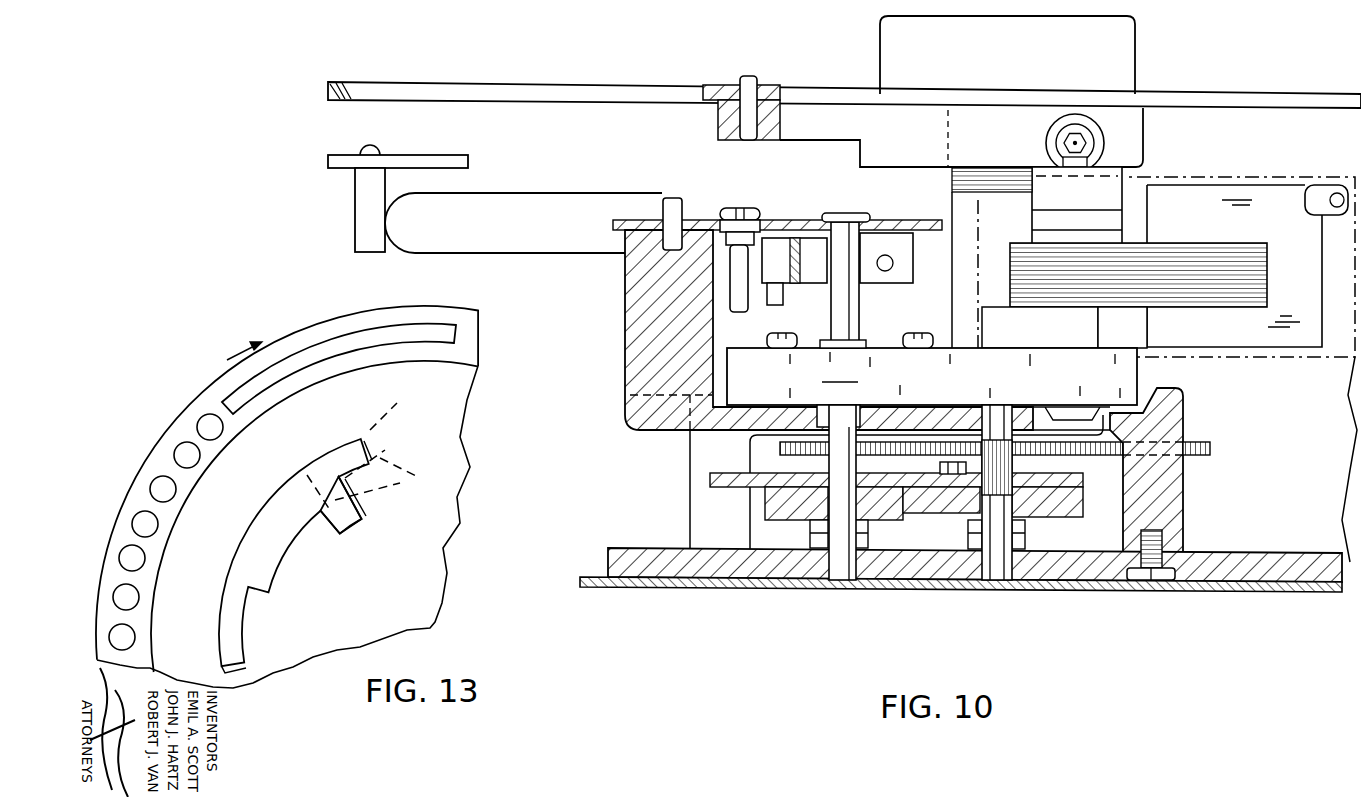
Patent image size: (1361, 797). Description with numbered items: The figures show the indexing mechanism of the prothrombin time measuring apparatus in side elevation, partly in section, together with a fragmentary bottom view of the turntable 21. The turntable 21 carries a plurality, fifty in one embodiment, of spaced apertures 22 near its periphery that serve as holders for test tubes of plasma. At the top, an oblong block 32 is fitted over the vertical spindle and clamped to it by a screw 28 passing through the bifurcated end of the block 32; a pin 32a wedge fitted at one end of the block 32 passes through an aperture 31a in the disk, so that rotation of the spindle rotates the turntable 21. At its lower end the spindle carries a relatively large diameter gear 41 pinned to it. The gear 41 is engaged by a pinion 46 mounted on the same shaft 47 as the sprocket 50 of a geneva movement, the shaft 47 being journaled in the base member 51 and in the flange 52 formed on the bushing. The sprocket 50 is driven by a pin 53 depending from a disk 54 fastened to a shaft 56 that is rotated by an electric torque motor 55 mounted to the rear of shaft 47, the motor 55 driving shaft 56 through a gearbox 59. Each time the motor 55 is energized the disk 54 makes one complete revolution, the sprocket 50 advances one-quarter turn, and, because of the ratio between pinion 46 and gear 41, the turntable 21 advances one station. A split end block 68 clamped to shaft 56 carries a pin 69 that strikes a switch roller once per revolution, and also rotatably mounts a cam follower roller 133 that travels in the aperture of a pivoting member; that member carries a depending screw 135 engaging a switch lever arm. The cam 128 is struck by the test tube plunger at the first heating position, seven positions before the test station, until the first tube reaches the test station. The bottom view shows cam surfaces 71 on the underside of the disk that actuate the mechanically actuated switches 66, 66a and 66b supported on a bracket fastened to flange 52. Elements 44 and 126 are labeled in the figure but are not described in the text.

In FIG. 10, the turntable 21 is at (538, 82).
In FIG. 13, the turntable 21 is at (190, 388).
In FIG. 13, the apertures 22 is at (178, 458).
In FIG. 10, the screw 28 is at (1078, 140).
In FIG. 10, the aperture 31a is at (733, 88).
In FIG. 10, the oblong block 32 is at (1137, 140).
In FIG. 10, the pin 32a is at (750, 76).
In FIG. 10, the gear 41 is at (1211, 449).
In FIG. 10, the cover 44 is at (1138, 32).
In FIG. 10, the pinion 46 is at (1014, 478).
In FIG. 10, the shaft 47 is at (1002, 582).
In FIG. 10, the sprocket 50 is at (1075, 500).
In FIG. 10, the base member 51 is at (1072, 580).
In FIG. 10, the flange 52 is at (1040, 410).
In FIG. 10, the pin 53 is at (937, 468).
In FIG. 10, the disk 54 is at (735, 487).
In FIG. 10, the electric torque motor 55 is at (1283, 360).
In FIG. 10, the shaft 56 is at (840, 582).
In FIG. 10, the gearbox 59 is at (932, 376).
In FIG. 13, the switch 66 is at (402, 476).
In FIG. 13, the switch 66a is at (388, 444).
In FIG. 13, the switch 66b is at (374, 440).
In FIG. 10, the split end block 68 is at (905, 283).
In FIG. 10, the pin 69 is at (784, 294).
In FIG. 13, the cam surfaces 71 is at (268, 510).
In FIG. 10, the pin 126 is at (678, 196).
In FIG. 10, the cam 128 is at (357, 233).
In FIG. 13, the cam 128 is at (442, 304).
In FIG. 10, the cam follower roller 133 is at (845, 212).
In FIG. 10, the depending screw 135 is at (740, 287).